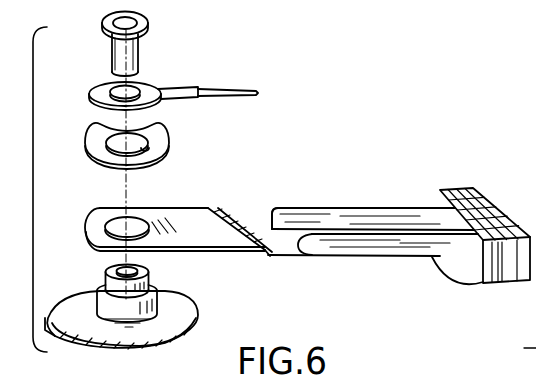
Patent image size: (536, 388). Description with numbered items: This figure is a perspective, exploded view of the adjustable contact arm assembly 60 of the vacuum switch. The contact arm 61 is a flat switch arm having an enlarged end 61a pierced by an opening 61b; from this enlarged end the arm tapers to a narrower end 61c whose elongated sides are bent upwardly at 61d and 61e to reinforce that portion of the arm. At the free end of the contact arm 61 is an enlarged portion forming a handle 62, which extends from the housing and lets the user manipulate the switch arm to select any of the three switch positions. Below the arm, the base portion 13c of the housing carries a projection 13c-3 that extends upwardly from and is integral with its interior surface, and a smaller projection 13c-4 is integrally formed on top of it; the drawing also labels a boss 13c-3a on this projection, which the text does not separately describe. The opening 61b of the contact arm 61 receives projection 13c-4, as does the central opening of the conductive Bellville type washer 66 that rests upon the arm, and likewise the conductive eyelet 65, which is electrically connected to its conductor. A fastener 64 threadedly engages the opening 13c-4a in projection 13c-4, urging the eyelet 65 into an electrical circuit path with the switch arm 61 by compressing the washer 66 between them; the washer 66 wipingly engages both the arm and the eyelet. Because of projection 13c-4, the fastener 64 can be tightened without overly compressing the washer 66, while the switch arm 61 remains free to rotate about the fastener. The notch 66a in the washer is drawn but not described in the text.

The contact arm assembly 60 is at (352, 102).
The contact arm 61 is at (274, 224).
The enlarged end 61a is at (113, 210).
The opening 61b is at (133, 212).
The narrower end 61c is at (263, 238).
The upwardly bent side 61d is at (400, 238).
The upwardly bent side 61e is at (377, 207).
The handle portion 62 is at (461, 153).
The fastener 64 is at (139, 47).
The conductive eyelet 65 is at (100, 82).
The conductive Bellville type washer 66 is at (132, 140).
The notch of washer 66a is at (150, 146).
The base portion 13c is at (150, 314).
The projection 13c-3 is at (193, 313).
The boss 13c-3a is at (158, 288).
The projection 13c-4 is at (130, 274).
The opening 13c-4a is at (89, 264).